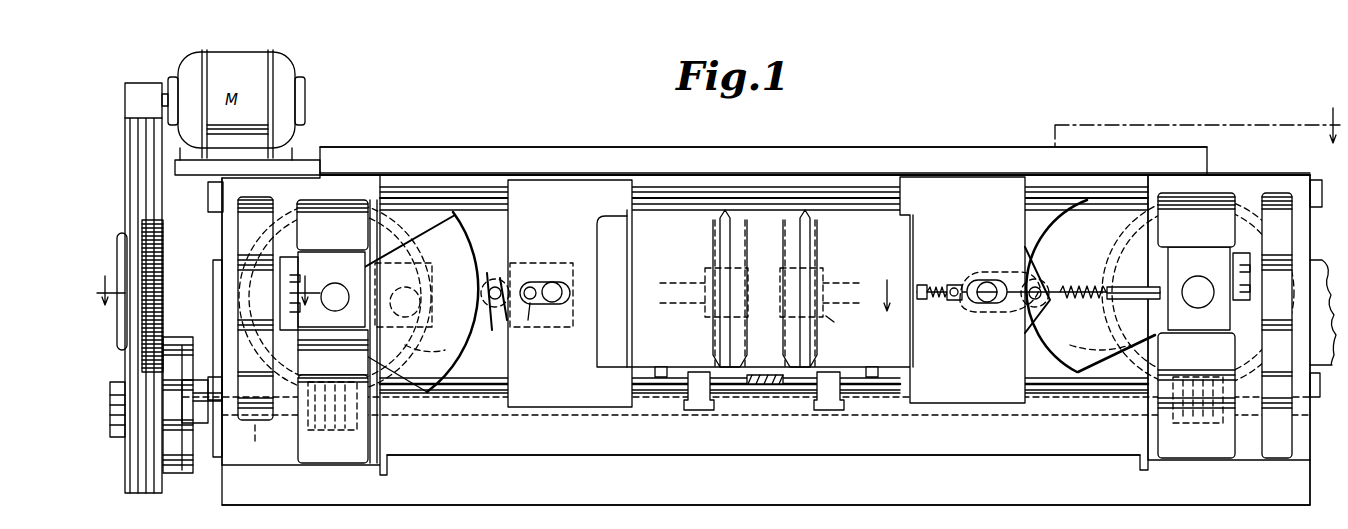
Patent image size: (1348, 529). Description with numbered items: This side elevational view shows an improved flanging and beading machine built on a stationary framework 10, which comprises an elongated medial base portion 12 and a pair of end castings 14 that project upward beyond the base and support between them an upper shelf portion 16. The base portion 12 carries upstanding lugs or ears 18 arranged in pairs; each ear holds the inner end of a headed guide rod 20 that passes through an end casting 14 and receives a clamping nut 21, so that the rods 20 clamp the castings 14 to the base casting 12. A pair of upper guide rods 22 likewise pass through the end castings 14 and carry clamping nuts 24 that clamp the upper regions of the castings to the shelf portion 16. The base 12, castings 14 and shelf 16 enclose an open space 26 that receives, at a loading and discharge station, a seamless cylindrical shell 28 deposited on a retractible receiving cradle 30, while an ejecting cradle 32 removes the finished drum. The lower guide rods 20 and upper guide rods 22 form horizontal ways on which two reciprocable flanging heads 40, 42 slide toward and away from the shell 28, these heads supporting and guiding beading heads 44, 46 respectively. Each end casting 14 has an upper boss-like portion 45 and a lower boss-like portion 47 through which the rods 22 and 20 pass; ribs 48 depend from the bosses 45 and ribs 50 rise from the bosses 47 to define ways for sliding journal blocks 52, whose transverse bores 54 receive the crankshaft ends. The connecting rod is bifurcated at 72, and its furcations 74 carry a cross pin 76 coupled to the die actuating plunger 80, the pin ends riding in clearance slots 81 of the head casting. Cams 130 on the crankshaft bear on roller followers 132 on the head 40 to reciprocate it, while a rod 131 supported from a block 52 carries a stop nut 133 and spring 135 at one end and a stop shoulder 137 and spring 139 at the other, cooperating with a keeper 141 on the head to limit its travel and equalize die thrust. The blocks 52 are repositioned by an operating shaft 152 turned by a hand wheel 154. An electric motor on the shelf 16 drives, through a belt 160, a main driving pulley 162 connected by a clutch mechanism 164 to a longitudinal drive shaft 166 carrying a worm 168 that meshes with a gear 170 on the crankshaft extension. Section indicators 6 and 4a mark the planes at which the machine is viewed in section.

The stationary framework 10 is at (388, 440).
The medial base portion 12 is at (766, 466).
The end castings 14 is at (380, 420).
The upper shelf portion 16 is at (850, 154).
The upstanding lugs or ears 18 is at (698, 388).
The headed guide rod 20 is at (465, 394).
The clamping nut 21 is at (1315, 373).
The upper guide rods 22 is at (708, 190).
The clamping nuts 24 is at (1323, 180).
The open space 26 is at (485, 218).
The seamless cylindrical shell 28 is at (767, 291).
The receiving cradle 30 is at (670, 362).
The ejecting cradle 32 is at (775, 384).
The reciprocable flanging head 40 is at (565, 180).
The reciprocable flanging head 42 is at (978, 186).
The beading head 44 is at (704, 265).
The upper boss-like portion 45 is at (341, 200).
The beading head 46 is at (837, 319).
The lower boss-like portion 47 is at (260, 385).
The ribs 48 is at (360, 232).
The ribs 50 is at (372, 362).
The journal blocks 52 is at (330, 260).
The central transverse bores 54 is at (345, 280).
The bifurcated end 72 is at (528, 286).
The furcations 74 is at (546, 282).
The cross pin 76 is at (556, 286).
The die actuating plunger 80 is at (676, 306).
The clearance slots 81 is at (529, 320).
The cams 130 is at (465, 245).
The rod 131 is at (1056, 288).
The cam followers 132 is at (497, 280).
The stop nut 133 is at (922, 286).
The spring 135 is at (955, 290).
The stop shoulder 137 is at (1106, 301).
The spring 139 is at (1100, 288).
The keeper 141 is at (952, 300).
The operating shaft 152 is at (140, 292).
The hand wheel 154 is at (120, 340).
The driving belt 160 is at (130, 163).
The main driving pulley 162 is at (128, 460).
The clutch mechanism 164 is at (178, 474).
The drive shaft 166 is at (749, 442).
The worm 168 is at (328, 440).
The gear 170 is at (1140, 370).
The section line 6 is at (208, 282).
The section line 4a is at (1105, 201).